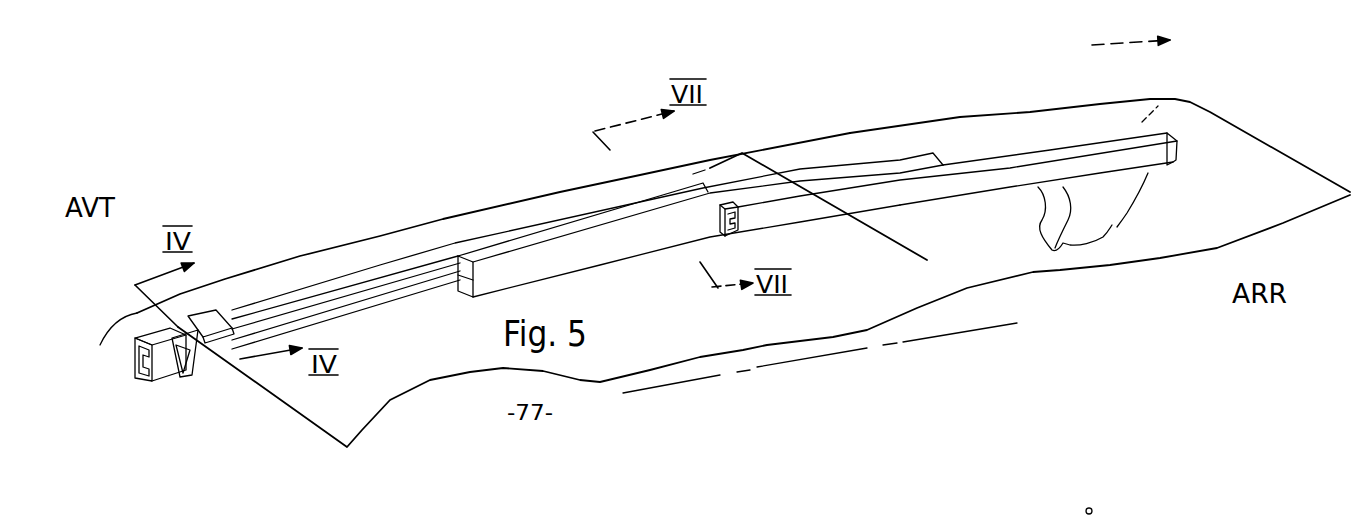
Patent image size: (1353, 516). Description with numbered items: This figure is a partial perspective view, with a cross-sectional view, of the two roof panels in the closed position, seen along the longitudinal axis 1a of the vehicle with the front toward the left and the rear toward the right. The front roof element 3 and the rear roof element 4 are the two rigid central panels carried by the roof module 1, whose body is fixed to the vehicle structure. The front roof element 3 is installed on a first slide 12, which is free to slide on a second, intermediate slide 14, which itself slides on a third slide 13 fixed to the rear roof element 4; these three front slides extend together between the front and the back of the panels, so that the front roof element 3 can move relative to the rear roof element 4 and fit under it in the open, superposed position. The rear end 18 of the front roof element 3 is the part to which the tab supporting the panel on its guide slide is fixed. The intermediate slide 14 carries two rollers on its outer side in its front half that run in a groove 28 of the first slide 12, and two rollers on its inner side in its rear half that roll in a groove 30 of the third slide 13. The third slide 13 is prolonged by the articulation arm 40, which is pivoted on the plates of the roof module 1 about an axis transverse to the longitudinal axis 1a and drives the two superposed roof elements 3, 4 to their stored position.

The roof module 1 is at (815, 96).
The longitudinal axis of the vehicle 1a is at (947, 338).
The front roof element 3 is at (443, 214).
The rear roof element 4 is at (895, 129).
The first slide 12 is at (340, 263).
The third slide 13 is at (983, 159).
The second slide 14 is at (565, 248).
The rear end of the front panel 18 is at (877, 233).
The groove 28 is at (137, 368).
The groove 30 is at (719, 237).
The first arm 40 is at (1110, 226).